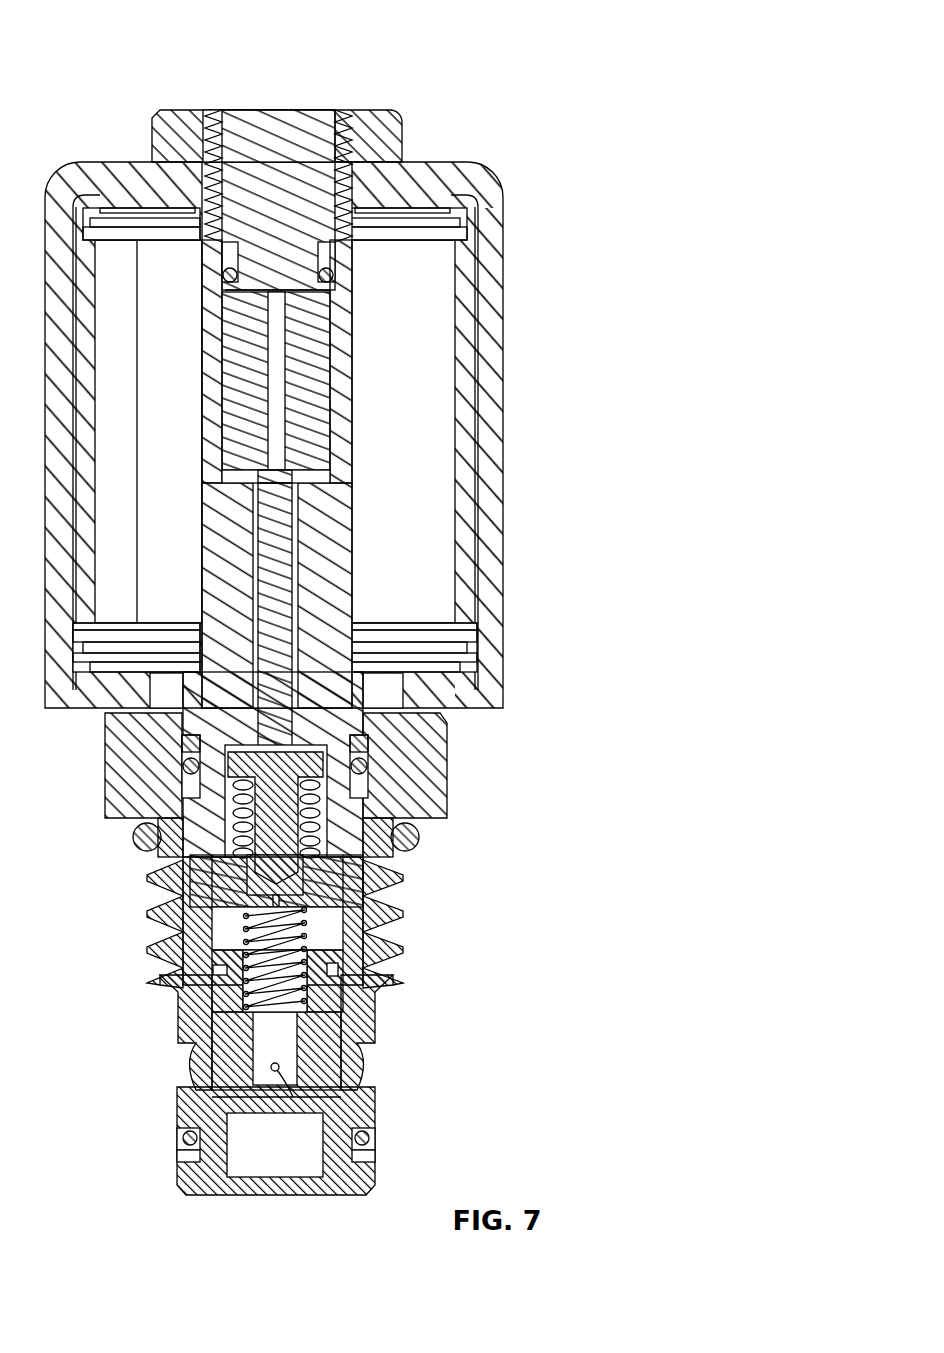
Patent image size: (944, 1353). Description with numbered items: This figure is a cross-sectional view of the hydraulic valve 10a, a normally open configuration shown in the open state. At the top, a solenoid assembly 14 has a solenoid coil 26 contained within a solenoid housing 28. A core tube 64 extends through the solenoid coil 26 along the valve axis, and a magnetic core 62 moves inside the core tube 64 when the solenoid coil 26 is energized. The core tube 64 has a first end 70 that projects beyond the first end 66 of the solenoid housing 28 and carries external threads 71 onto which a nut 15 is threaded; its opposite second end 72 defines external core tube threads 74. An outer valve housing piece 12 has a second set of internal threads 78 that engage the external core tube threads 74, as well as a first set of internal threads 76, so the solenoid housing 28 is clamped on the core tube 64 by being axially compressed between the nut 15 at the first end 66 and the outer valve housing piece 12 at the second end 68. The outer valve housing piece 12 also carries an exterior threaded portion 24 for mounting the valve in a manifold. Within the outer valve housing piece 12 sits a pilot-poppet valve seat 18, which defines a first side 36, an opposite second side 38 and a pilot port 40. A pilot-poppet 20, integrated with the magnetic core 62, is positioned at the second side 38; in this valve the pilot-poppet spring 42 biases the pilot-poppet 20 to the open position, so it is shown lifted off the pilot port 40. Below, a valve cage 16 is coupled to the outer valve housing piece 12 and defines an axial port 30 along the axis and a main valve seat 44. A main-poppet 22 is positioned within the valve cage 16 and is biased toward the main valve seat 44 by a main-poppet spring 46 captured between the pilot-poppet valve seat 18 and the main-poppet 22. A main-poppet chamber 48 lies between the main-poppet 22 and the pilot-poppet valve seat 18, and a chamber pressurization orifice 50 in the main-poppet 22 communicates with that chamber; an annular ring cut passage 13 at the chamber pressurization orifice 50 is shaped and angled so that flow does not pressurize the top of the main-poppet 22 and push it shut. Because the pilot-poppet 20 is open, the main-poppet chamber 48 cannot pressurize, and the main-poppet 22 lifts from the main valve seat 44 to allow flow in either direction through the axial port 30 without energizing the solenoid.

The hydraulic valve 10a is at (508, 128).
The first end of the core tube 70 is at (348, 90).
The nut 15 is at (405, 100).
The external threads 71 is at (205, 140).
The first end of the solenoid housing 66 is at (495, 158).
The solenoid assembly 14 is at (505, 210).
The core tube 64 is at (345, 305).
The solenoid housing 28 is at (505, 300).
The solenoid coil 26 is at (427, 393).
The magnetic core 62 is at (330, 598).
The second end of the solenoid housing 68 is at (520, 700).
The second set of internal threads 78 is at (188, 760).
The pilot-poppet spring 42 is at (327, 752).
The external core tube threads 74 is at (180, 816).
The outer valve housing piece 12 is at (447, 762).
The second side of the pilot-poppet valve seat 38 is at (418, 835).
The second end of the core tube 72 is at (205, 863).
The pilot-poppet 20 is at (370, 868).
The pilot-poppet valve seat 18 is at (192, 876).
The exterior threaded portion 24 is at (140, 902).
The first side of the pilot-poppet valve seat 36 is at (210, 942).
The pilot port 40 is at (322, 920).
The main-poppet chamber 48 is at (345, 947).
The first set of internal threads 76 is at (190, 988).
The main-poppet spring 46 is at (320, 1027).
The main-poppet 22 is at (375, 1008).
The annular ring cut passage 13 is at (380, 1060).
The valve cage 16 is at (385, 1100).
The chamber pressurization orifice 50 is at (325, 1110).
The main valve seat 44 is at (313, 1113).
The axial port 30 is at (262, 1205).